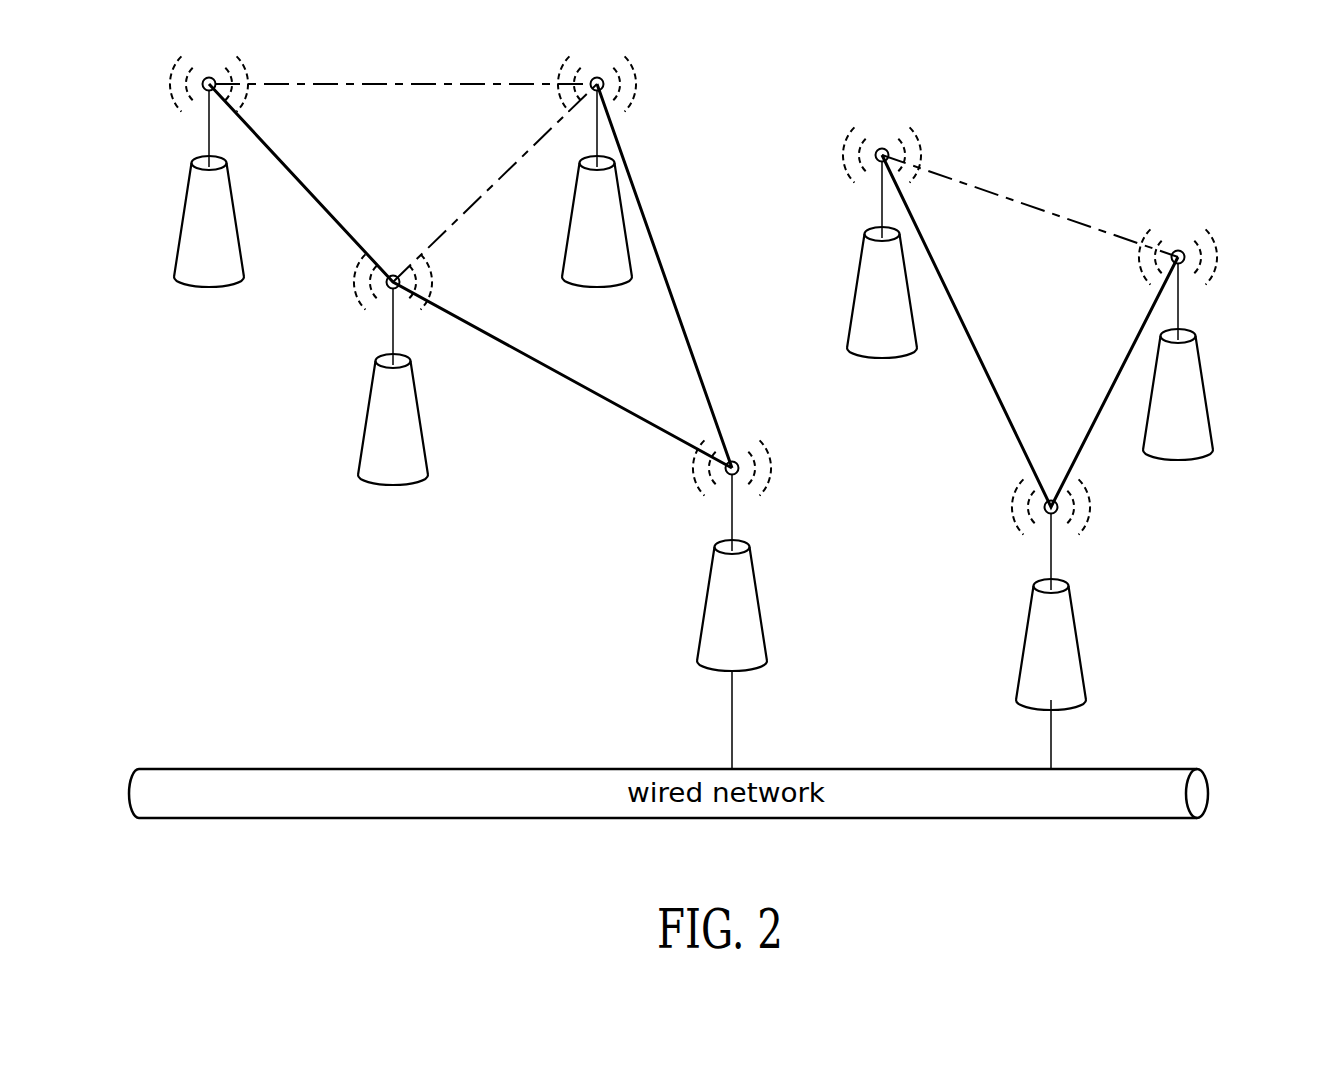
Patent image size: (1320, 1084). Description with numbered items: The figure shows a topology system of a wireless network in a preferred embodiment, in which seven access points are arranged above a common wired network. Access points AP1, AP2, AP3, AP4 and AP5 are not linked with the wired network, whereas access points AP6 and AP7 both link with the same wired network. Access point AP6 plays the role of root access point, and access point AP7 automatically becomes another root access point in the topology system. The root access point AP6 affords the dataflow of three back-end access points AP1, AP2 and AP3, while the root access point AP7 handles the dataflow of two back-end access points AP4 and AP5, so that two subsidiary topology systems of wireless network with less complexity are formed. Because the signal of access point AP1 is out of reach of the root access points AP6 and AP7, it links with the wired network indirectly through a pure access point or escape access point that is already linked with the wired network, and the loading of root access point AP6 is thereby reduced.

The access point AP1 is at (209, 201).
The access point AP2 is at (414, 399).
The access point AP3 is at (597, 201).
The access point AP4 is at (882, 265).
The access point AP5 is at (1208, 356).
The root access point AP6 is at (756, 555).
The root access point AP7 is at (1076, 594).